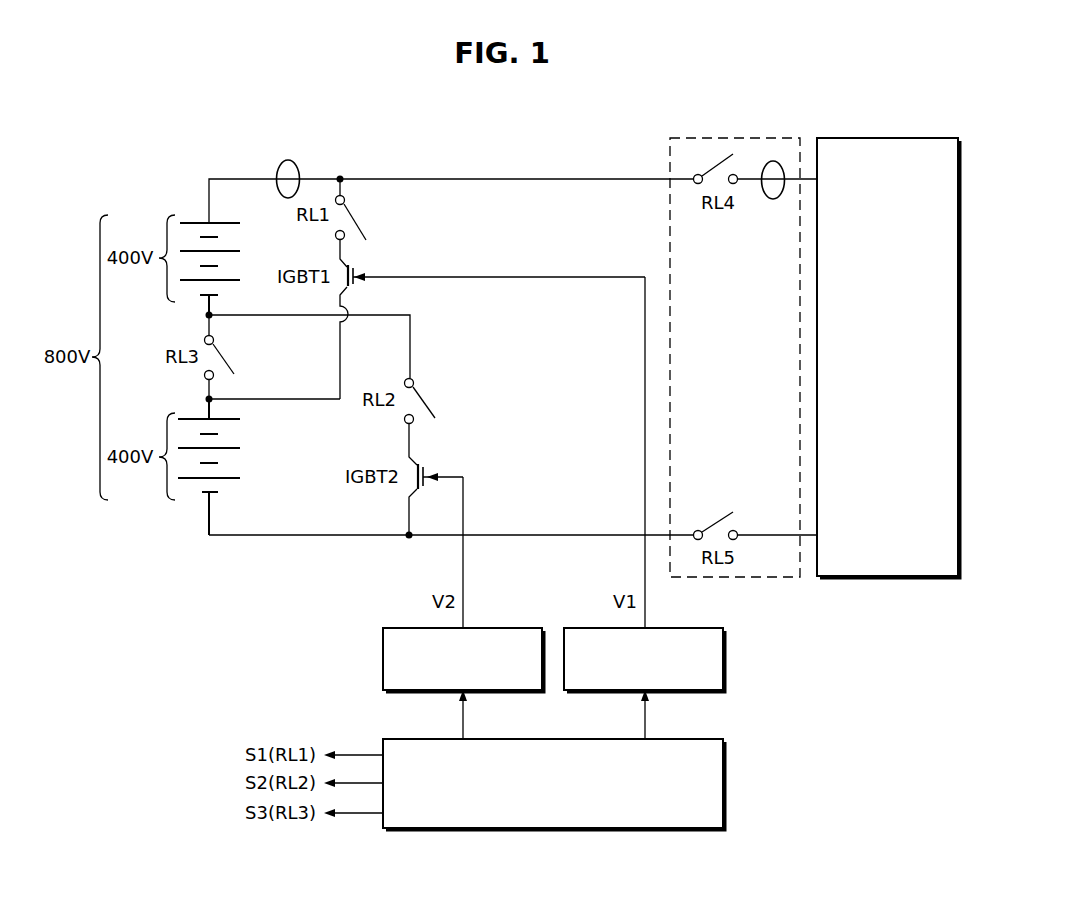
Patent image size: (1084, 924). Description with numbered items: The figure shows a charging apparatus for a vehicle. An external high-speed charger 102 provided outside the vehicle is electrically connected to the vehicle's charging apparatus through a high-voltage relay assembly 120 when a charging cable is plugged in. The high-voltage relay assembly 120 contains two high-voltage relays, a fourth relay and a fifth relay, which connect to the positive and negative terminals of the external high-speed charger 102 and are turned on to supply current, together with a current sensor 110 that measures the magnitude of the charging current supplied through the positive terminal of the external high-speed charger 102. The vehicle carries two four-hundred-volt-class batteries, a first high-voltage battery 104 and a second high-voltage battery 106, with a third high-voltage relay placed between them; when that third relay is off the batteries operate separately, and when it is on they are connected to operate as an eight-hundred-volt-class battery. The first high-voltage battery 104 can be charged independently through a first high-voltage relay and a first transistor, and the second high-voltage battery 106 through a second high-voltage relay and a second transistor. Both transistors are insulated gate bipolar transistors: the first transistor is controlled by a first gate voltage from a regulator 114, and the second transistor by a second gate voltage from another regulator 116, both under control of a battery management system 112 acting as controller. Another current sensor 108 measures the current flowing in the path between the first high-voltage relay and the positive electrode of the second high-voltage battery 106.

The external high-speed charger 102 is at (938, 138).
The first high-voltage battery 104 is at (205, 495).
The second high-voltage battery 106 is at (190, 218).
The current sensor 108 is at (288, 160).
The current sensor 110 is at (775, 161).
The battery management system 112 is at (700, 739).
The regulator 114 is at (700, 628).
The regulator 116 is at (515, 628).
The high-voltage relay assembly 120 is at (697, 137).